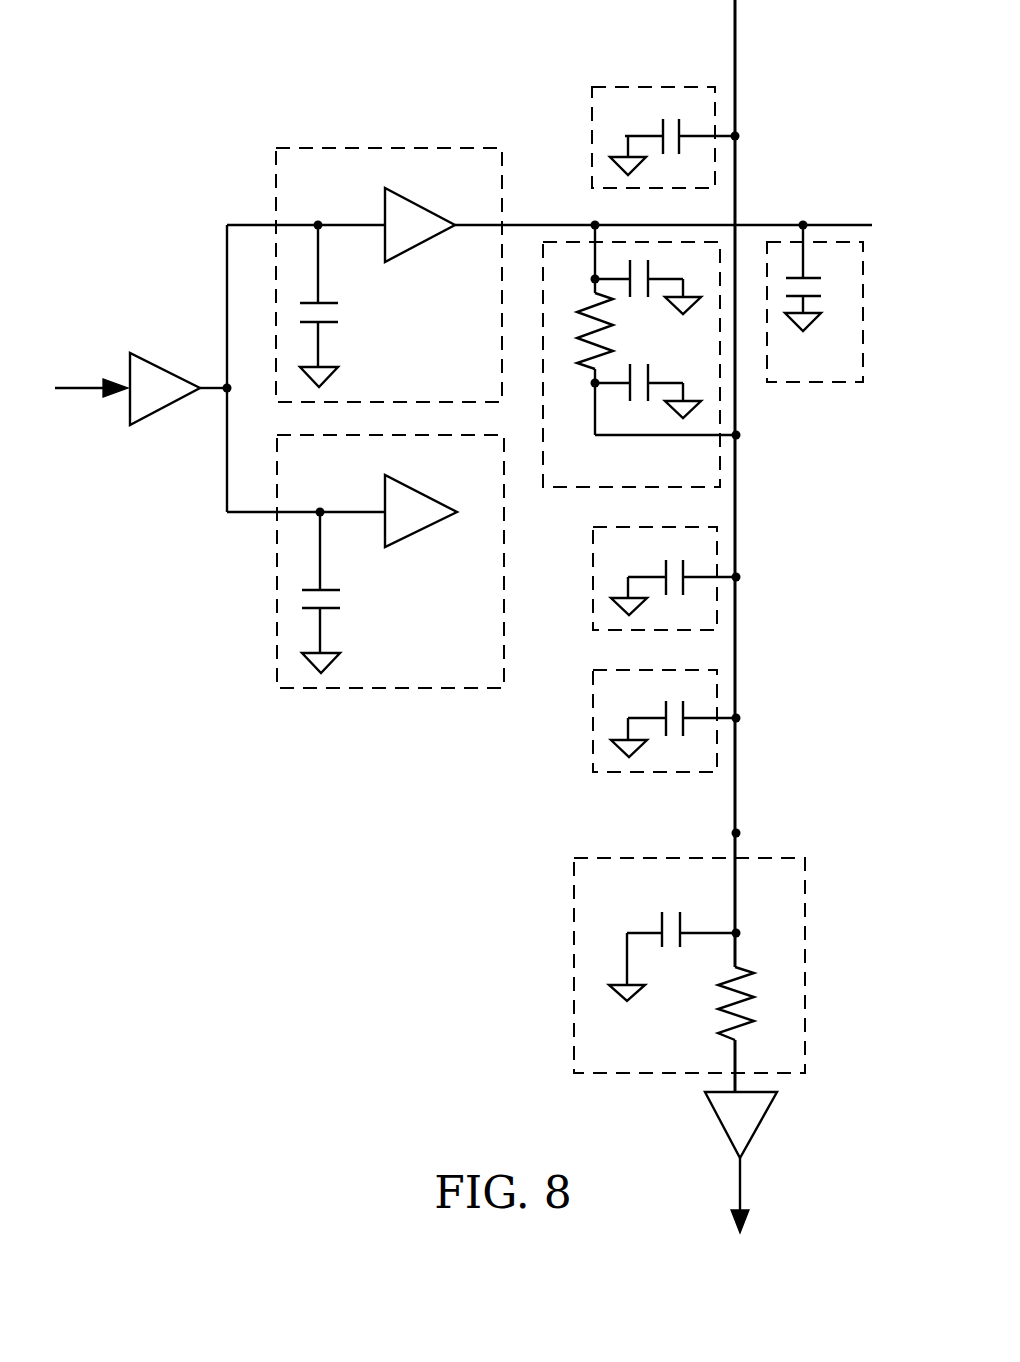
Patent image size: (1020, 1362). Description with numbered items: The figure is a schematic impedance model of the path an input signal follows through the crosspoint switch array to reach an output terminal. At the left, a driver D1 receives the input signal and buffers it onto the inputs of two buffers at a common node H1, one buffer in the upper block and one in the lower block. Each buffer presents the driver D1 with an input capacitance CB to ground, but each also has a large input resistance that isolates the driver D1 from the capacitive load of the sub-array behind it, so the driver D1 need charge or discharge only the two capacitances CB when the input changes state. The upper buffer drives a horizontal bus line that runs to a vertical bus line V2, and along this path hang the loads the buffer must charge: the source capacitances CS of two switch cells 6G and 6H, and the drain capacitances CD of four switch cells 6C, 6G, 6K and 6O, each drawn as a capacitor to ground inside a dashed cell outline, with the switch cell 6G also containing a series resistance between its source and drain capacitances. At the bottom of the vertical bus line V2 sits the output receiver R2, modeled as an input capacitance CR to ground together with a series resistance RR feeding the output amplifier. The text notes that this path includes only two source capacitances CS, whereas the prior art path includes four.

The supply voltage bus V2 is at (732, 47).
The driver D1 is at (166, 402).
The input node H1 is at (222, 383).
The input capacitance CB is at (339, 449).
The switch cell 6C is at (707, 182).
The switch cell 6G is at (708, 475).
The switch cell 6H is at (823, 372).
The switch cell 6K is at (707, 620).
The switch cell 6O is at (708, 762).
The source capacitance CS is at (723, 278).
The drain capacitance CD is at (668, 425).
The output receiver R2 is at (766, 1065).
The input capacitance CR is at (675, 956).
The output network resistor RR is at (747, 1003).